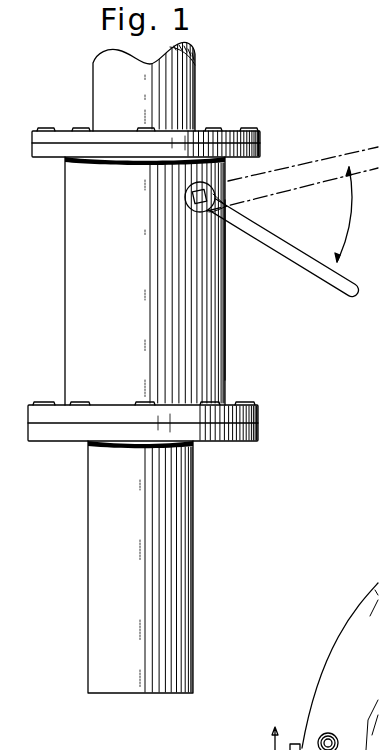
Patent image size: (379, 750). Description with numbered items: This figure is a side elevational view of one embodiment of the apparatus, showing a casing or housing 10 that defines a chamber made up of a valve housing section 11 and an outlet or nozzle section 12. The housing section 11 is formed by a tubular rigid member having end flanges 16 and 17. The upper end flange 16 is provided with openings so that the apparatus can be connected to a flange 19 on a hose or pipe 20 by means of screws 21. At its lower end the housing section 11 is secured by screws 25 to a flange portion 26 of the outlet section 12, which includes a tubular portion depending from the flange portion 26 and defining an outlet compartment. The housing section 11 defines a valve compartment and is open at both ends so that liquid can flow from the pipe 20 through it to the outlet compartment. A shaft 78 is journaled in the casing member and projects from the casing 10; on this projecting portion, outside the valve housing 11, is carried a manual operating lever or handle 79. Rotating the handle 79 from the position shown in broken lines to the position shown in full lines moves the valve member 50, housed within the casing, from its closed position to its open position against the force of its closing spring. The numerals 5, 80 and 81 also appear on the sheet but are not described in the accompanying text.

The valve body 10 is at (226, 352).
The body side wall 11 is at (226, 291).
The lower pipe section 12 is at (118, 551).
The upper flange 16 is at (262, 155).
The lower flange bolt 17 is at (260, 413).
The upper flange bolt 19 is at (262, 137).
The upper pipe section 20 is at (185, 91).
The flange bolt 21 is at (48, 128).
The bolt 25 is at (41, 402).
The lower flange 26 is at (258, 435).
The valve assembly 5 is at (374, 358).
The cover plate 50 is at (325, 666).
The wrench head 78 is at (213, 206).
The wrench handle 79 is at (346, 298).
The angle of rotation 80 is at (293, 204).
The indicator 81 is at (372, 748).